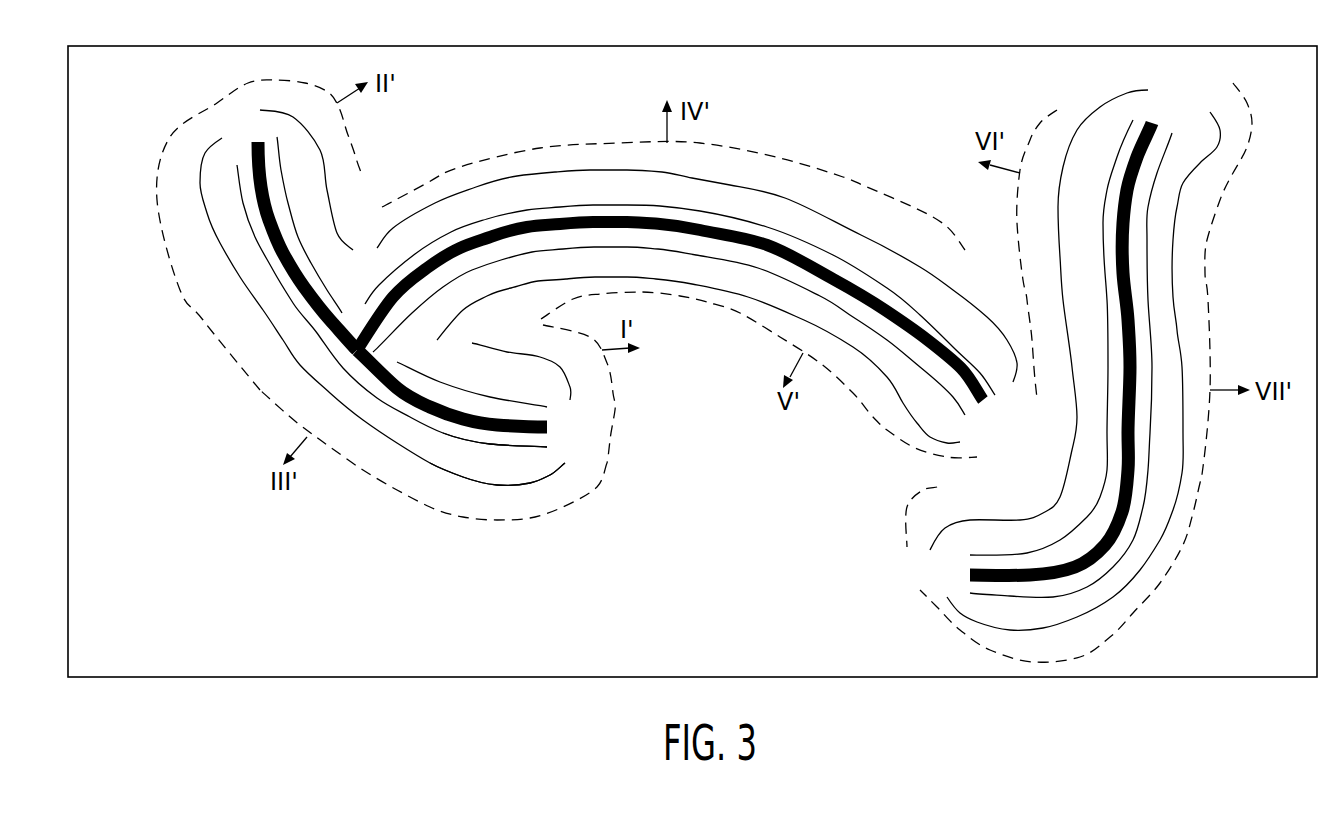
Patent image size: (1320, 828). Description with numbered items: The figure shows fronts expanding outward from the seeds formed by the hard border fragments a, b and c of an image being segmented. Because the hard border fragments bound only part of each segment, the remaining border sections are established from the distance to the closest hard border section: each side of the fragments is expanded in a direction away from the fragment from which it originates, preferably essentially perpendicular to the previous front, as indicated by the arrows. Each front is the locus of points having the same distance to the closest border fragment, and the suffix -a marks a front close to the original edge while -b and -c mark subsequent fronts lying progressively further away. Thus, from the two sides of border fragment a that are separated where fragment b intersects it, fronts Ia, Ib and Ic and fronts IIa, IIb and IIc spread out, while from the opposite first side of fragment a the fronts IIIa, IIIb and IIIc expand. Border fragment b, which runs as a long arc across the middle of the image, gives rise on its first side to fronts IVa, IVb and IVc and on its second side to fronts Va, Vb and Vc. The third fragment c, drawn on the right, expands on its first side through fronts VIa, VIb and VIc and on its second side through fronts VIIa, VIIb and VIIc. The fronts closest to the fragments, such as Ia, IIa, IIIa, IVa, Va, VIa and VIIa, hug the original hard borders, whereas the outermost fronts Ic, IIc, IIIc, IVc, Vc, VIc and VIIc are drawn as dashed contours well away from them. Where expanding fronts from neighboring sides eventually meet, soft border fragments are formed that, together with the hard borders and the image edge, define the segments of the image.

The expanding front close to the original edge of side I Ia is at (493, 395).
The subsequent expanding front of side I Ib is at (563, 360).
The further expanding front of side I Ic is at (613, 388).
The expanding front close to the original edge of side II IIa is at (323, 283).
The subsequent expanding front of side II IIb is at (328, 210).
The further expanding front of side II IIc is at (363, 173).
The expanding front close to the original edge of side III IIIa is at (550, 442).
The subsequent expanding front of side III IIIb is at (563, 463).
The further expanding front of side III IIIc is at (597, 482).
The expanding front close to the original edge of side IV IVa is at (993, 397).
The subsequent expanding front of side IV IVb is at (983, 300).
The further expanding front of side IV IVc is at (867, 187).
The expanding front close to the original edge of side V Va is at (965, 416).
The subsequent expanding front of side V Vb is at (917, 433).
The further expanding front of side V Vc is at (873, 423).
The expanding front close to the original edge of side VI VIa is at (1133, 120).
The subsequent expanding front of side VI VIb is at (1148, 90).
The further expanding front of side VI VIc is at (1043, 120).
The expanding front close to the original edge of side VII VIIa is at (1123, 537).
The subsequent expanding front of side VII VIIb is at (1170, 527).
The further expanding front of side VII VIIc is at (1200, 487).